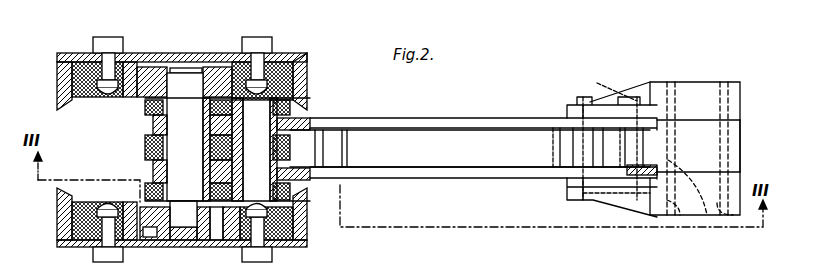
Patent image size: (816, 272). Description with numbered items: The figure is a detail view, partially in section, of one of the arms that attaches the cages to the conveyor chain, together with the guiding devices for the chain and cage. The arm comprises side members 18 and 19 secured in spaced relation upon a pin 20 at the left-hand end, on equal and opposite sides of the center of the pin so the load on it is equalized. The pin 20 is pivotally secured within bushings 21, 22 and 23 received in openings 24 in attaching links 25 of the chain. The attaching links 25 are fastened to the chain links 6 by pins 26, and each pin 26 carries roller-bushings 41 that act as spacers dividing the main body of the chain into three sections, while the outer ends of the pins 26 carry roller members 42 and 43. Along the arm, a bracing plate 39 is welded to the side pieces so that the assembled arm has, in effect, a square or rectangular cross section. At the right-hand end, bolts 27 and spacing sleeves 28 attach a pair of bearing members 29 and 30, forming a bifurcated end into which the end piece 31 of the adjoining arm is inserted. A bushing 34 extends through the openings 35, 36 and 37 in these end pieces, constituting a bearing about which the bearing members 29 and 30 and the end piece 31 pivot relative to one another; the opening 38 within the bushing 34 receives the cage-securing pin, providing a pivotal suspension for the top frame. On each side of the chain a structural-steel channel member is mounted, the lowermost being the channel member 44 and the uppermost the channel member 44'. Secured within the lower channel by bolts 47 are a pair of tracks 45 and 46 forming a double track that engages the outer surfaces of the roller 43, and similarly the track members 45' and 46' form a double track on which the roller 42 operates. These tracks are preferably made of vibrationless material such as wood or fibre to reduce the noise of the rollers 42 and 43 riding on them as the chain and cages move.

The links 6 is at (145, 107).
The side member 18 is at (513, 172).
The side member 19 is at (505, 104).
The pin 20 is at (290, 121).
The bushing 21 is at (298, 196).
The bushing 22 is at (283, 147).
The bushing 23 is at (297, 100).
The openings 24 is at (222, 220).
The attaching links 25 is at (290, 170).
The pins 26 is at (185, 147).
The bolts 27 is at (586, 97).
The spacing sleeves 28 is at (625, 155).
The bearing member 29 is at (740, 100).
The bearing member 30 is at (740, 180).
The end piece 31 is at (740, 141).
The bushing 34 is at (725, 82).
The opening 35 is at (677, 83).
The opening 36 is at (679, 216).
The opening 37 is at (708, 216).
The opening 38 is at (733, 216).
The bracing plate 39 is at (447, 158).
The roller-bushings 41 is at (153, 178).
The roller member 42 is at (148, 80).
The roller member 43 is at (155, 233).
The channel member 44 is at (46, 227).
The channel member 44' is at (44, 72).
The track 45 is at (285, 232).
The track member 45' is at (275, 65).
The track 46 is at (74, 224).
The track member 46' is at (73, 79).
The bolts 47 is at (110, 22).